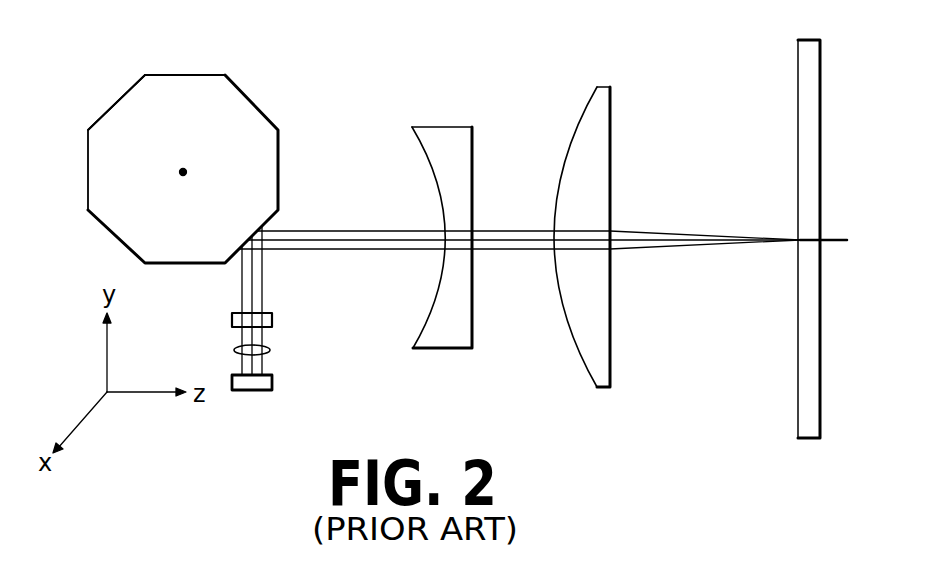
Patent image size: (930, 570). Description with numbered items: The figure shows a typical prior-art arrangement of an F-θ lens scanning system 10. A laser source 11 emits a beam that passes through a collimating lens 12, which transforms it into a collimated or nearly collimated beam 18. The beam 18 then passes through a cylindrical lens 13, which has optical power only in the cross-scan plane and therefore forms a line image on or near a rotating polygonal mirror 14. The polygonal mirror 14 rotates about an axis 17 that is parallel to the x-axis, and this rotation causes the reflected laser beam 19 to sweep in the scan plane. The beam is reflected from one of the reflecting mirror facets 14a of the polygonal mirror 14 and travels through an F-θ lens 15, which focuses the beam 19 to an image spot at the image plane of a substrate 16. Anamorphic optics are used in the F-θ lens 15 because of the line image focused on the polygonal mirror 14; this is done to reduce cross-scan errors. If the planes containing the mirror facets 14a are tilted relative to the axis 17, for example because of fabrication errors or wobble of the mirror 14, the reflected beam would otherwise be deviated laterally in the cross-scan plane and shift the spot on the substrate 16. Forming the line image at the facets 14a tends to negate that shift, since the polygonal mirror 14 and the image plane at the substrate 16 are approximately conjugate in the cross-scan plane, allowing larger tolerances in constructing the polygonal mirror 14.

The F-θ lens scanning system 10 is at (523, 428).
The laser source 11 is at (272, 375).
The collimating lens 12 is at (268, 350).
The cylindrical lens 13 is at (233, 316).
The rotating polygonal mirror 14 is at (212, 108).
The reflecting mirror facets 14a is at (176, 75).
The F-θ lens 15 is at (615, 85).
The substrate 16 is at (797, 363).
The axis 17 is at (182, 174).
The collimated beam 18 is at (262, 262).
The laser beam 19 is at (300, 229).